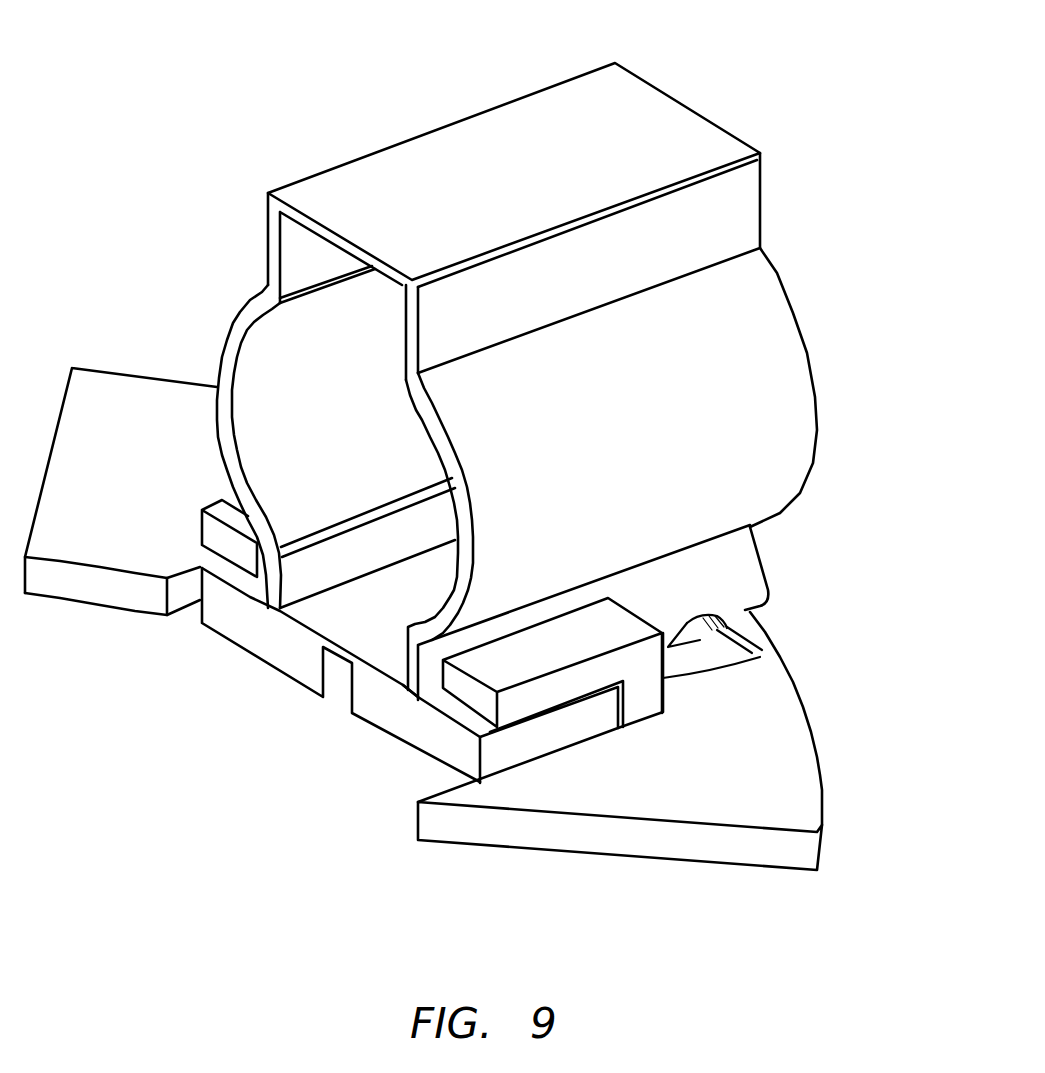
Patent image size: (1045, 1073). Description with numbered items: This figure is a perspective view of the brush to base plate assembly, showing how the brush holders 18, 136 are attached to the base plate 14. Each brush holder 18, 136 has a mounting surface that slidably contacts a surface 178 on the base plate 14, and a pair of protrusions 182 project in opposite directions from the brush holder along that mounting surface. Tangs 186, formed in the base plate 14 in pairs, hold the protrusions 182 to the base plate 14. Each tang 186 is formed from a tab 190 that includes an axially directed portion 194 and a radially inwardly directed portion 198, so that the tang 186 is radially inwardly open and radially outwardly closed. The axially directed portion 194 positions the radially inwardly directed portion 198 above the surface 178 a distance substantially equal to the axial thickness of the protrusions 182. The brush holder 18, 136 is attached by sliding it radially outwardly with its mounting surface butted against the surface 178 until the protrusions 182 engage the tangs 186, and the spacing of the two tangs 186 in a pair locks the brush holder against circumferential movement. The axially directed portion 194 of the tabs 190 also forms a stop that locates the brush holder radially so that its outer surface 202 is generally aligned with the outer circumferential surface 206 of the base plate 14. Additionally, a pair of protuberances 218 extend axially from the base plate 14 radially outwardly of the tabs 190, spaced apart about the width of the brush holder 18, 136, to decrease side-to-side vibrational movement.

The brush holder 18 is at (657, 107).
The brush holder 136 is at (392, 398).
The outer surface 202 is at (797, 272).
The radially inwardly directed portion 198 is at (427, 707).
The protrusion 182 is at (502, 750).
The tang 186 is at (647, 690).
The tab 190 is at (623, 612).
The protuberance 218 is at (745, 616).
The axially directed portion 194 is at (763, 652).
The base plate 14 is at (682, 741).
The surface 178 is at (787, 742).
The outer circumferential surface 206 is at (830, 770).